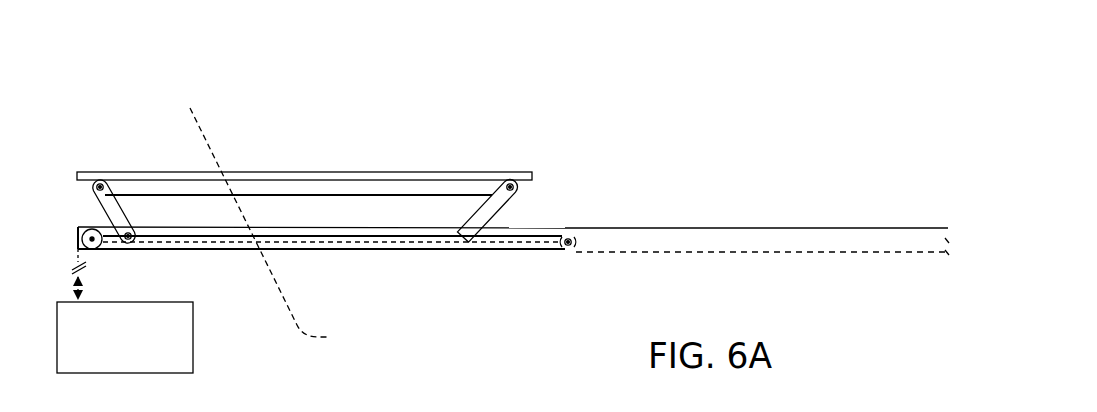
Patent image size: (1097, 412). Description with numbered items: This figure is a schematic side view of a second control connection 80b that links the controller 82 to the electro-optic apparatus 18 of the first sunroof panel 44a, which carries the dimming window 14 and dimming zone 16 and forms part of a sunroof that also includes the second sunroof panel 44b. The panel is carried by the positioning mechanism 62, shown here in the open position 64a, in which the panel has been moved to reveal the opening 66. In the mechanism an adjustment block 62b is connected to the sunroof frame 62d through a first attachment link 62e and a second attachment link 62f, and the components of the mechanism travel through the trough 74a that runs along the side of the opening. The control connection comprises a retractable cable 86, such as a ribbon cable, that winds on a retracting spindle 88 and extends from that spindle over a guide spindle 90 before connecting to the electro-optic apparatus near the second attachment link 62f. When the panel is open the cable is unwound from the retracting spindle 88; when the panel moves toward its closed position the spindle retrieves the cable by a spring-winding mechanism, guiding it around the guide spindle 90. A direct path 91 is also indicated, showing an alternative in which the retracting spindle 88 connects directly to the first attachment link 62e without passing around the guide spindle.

The dimming window 14 is at (295, 120).
The dimming zone 16 is at (295, 120).
The electro-optic apparatus 18 is at (295, 120).
The first sunroof panel 44a is at (347, 173).
The second sunroof panel 44b is at (350, 244).
The positioning mechanism 62 is at (497, 212).
The open position 64a is at (497, 212).
The adjustment block 62b is at (278, 228).
The sunroof frame 62d is at (458, 187).
The first attachment link 62e is at (90, 186).
The second attachment link 62f is at (497, 192).
The opening 66 is at (745, 236).
The trough 74a is at (428, 246).
The second control connection 80b is at (217, 322).
The controller 82 is at (125, 337).
The retractable cable 86 is at (321, 279).
The retracting spindle 88 is at (97, 251).
The guide spindle 90 is at (569, 255).
The direct path 91 is at (105, 223).